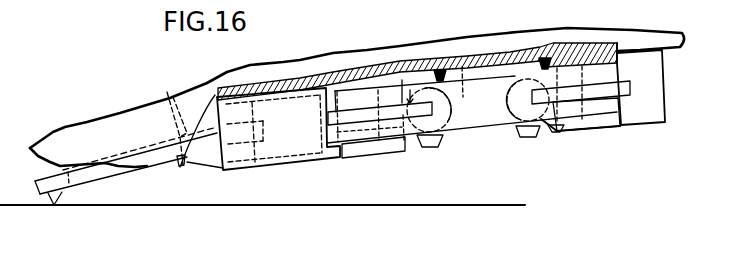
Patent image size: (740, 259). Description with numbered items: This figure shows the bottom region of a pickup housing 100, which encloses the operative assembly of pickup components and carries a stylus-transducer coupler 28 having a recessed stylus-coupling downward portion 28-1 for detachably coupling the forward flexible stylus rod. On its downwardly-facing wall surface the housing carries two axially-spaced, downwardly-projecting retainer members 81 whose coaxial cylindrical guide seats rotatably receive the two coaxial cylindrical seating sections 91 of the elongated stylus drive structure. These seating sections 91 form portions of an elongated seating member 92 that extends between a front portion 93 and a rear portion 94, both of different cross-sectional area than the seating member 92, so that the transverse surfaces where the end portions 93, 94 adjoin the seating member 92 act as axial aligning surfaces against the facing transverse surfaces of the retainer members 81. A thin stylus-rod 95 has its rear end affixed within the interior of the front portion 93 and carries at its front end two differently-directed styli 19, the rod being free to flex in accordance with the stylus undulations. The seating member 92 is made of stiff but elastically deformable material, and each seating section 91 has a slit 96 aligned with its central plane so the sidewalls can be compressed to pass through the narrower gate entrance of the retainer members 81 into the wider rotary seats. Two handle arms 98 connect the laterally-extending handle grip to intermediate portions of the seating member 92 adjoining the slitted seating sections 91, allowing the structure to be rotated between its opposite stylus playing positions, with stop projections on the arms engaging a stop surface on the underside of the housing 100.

The styli 19 is at (54, 205).
The stylus-transducer coupler 28 is at (153, 107).
The recessed stylus-coupling downward portion 28-1 is at (175, 167).
The retainer members 81 is at (363, 157).
The cylindrical seating sections 91 is at (353, 103).
The seating member 92 is at (477, 128).
The front portion 93 is at (317, 158).
The rear portion 94 is at (640, 124).
The stylus-rod 95 is at (106, 172).
The slit 96 is at (390, 110).
The handle arms 98 is at (468, 30).
The pickup housing 100 is at (307, 70).